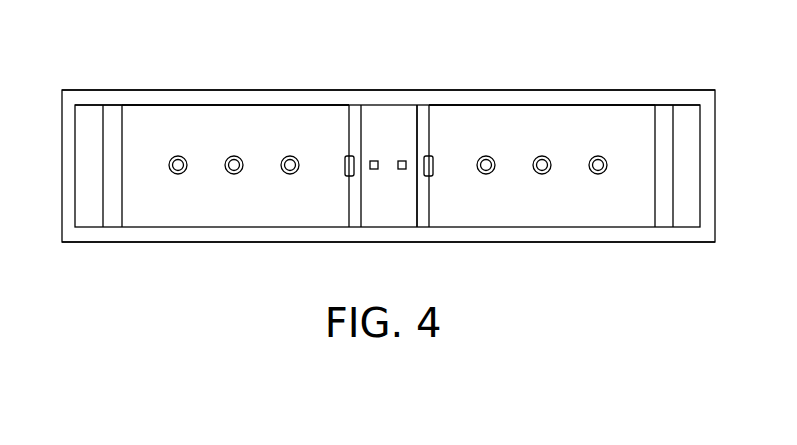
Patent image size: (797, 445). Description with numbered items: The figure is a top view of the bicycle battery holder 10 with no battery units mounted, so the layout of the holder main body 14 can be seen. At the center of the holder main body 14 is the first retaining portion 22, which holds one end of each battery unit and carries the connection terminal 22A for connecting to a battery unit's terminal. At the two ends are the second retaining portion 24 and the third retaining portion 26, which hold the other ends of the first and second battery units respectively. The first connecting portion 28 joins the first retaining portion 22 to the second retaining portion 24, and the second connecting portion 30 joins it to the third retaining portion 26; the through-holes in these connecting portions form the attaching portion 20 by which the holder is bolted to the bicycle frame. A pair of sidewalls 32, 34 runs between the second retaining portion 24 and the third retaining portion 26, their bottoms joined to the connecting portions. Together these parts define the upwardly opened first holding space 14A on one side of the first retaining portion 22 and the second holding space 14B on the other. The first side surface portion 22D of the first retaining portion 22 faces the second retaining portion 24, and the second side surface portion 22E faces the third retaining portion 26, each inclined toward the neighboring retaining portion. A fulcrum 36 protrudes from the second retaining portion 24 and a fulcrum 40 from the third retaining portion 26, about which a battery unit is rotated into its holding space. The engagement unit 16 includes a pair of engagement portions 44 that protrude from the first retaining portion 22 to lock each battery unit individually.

The battery holder 10 is at (724, 50).
The holder main body 14 is at (452, 89).
The first holding space 14A is at (257, 118).
The second holding space 14B is at (518, 118).
The engagement unit 16 is at (435, 144).
The attaching portion 20 is at (180, 175).
The first retaining portion 22 is at (389, 112).
The connection terminal 22A is at (375, 170).
The first side surface portion 22D is at (349, 208).
The second side surface portion 22E is at (429, 208).
The second retaining portion 24 is at (94, 112).
The third retaining portion 26 is at (684, 115).
The first connecting portion 28 is at (203, 112).
The second connecting portion 30 is at (577, 112).
The sidewall 32 is at (262, 236).
The sidewall 34 is at (320, 98).
The fulcrum 36 is at (113, 139).
The fulcrum 40 is at (662, 139).
The engagement portions 44 is at (345, 166).